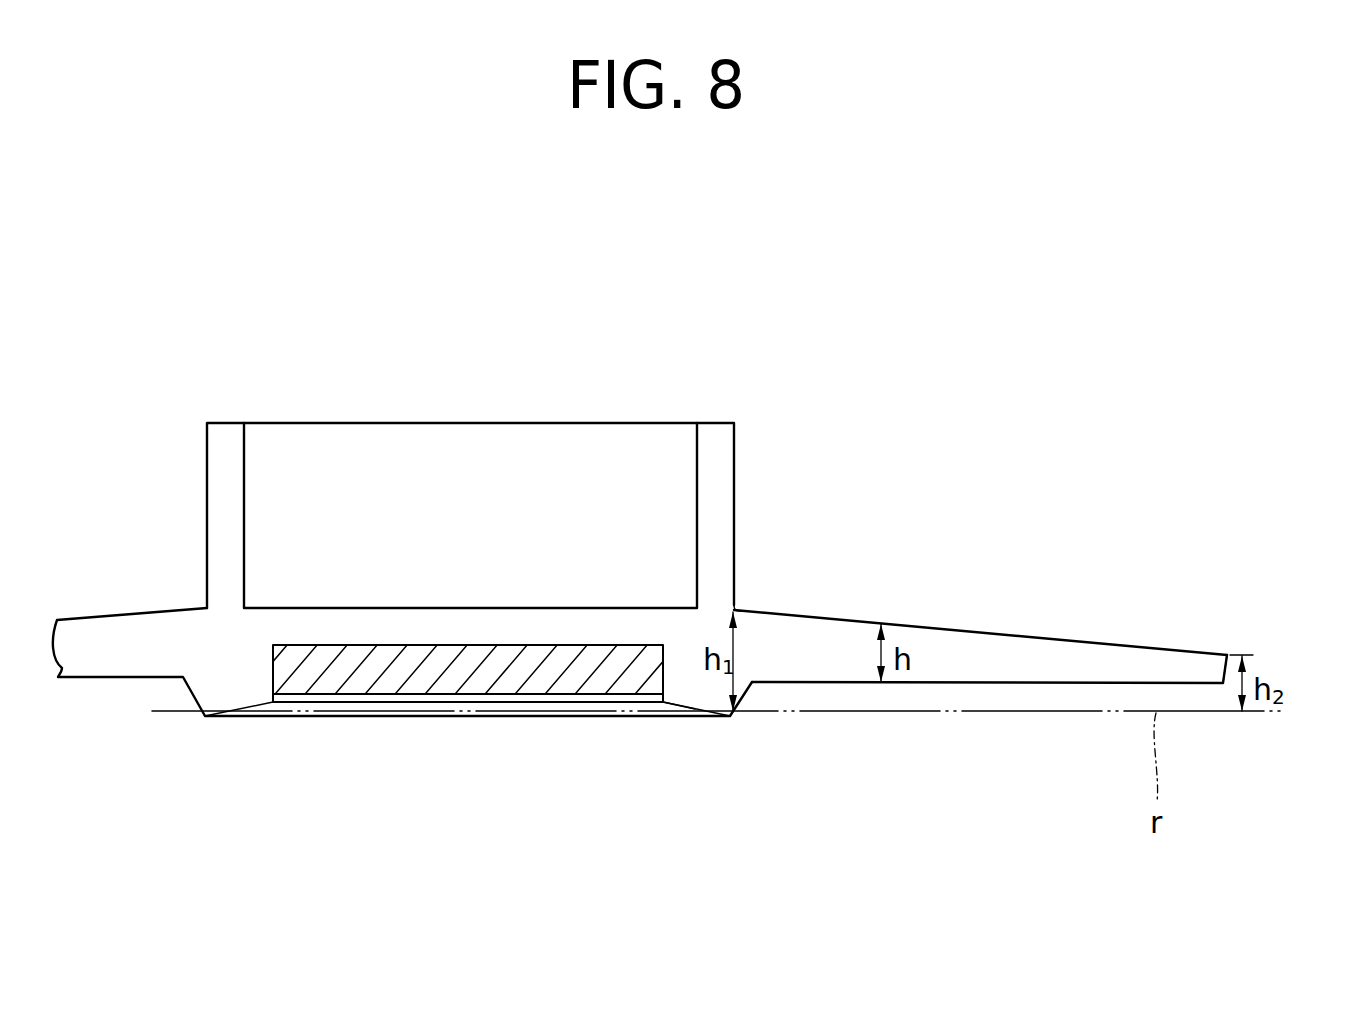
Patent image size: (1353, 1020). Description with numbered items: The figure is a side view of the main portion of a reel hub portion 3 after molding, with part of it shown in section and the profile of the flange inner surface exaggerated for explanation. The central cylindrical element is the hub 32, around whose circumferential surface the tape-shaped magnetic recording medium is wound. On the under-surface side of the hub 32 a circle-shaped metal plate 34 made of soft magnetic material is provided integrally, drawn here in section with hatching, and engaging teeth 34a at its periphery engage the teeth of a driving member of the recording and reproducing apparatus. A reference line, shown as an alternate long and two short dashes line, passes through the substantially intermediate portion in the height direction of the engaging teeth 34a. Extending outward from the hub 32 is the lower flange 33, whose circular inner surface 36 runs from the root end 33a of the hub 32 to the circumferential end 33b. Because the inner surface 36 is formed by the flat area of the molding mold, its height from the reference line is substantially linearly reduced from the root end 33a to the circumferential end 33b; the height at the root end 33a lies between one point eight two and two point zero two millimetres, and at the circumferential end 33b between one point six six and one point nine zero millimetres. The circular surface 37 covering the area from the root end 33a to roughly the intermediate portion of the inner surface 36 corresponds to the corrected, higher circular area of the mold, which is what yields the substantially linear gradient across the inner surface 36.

The reel hub portion 3 is at (772, 465).
The hub 32 is at (207, 452).
The lower flange 33 is at (1040, 700).
The root end 33a is at (740, 611).
The circumferential end 33b is at (1227, 655).
The metal plate 34 is at (421, 677).
The engaging teeth 34a is at (668, 705).
The inner surface 36 is at (1172, 632).
The circular surface 37 is at (981, 630).